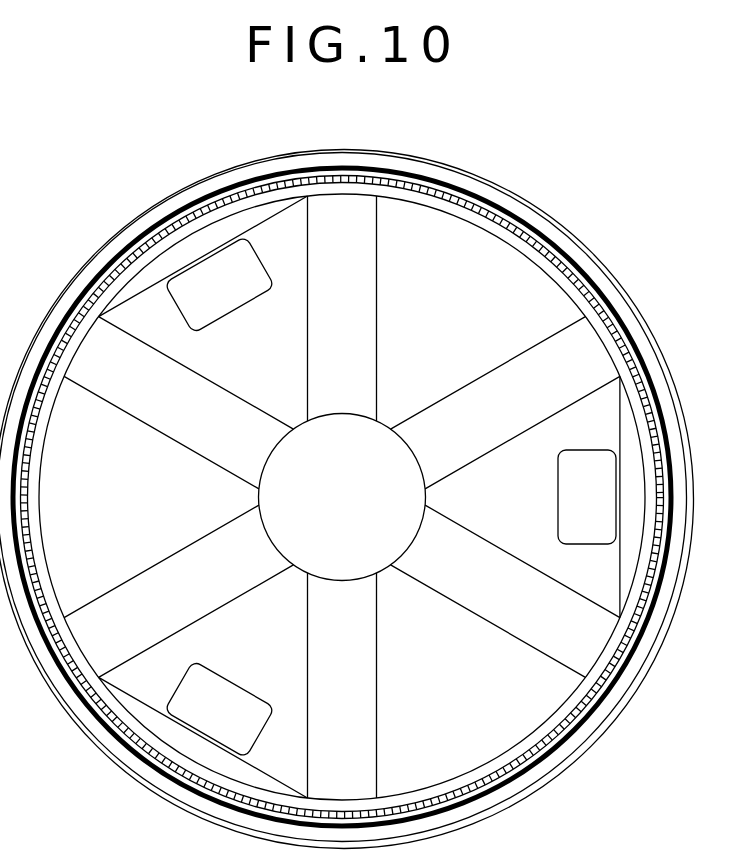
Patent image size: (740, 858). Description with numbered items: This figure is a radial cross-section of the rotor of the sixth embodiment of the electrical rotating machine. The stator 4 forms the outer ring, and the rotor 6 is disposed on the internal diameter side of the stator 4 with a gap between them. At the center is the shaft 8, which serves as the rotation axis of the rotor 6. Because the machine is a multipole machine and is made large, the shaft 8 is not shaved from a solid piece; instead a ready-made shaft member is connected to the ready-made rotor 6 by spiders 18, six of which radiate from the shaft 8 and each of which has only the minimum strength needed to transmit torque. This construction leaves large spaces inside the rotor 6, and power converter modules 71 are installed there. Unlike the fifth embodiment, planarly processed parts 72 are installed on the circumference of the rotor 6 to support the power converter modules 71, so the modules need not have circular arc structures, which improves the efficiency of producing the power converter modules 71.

The stator 4 is at (508, 205).
The rotor 6 is at (498, 235).
The shaft 8 is at (368, 443).
The spider 18 is at (530, 638).
The power converter module 71 is at (240, 300).
The planarly processed part 72 is at (141, 290).